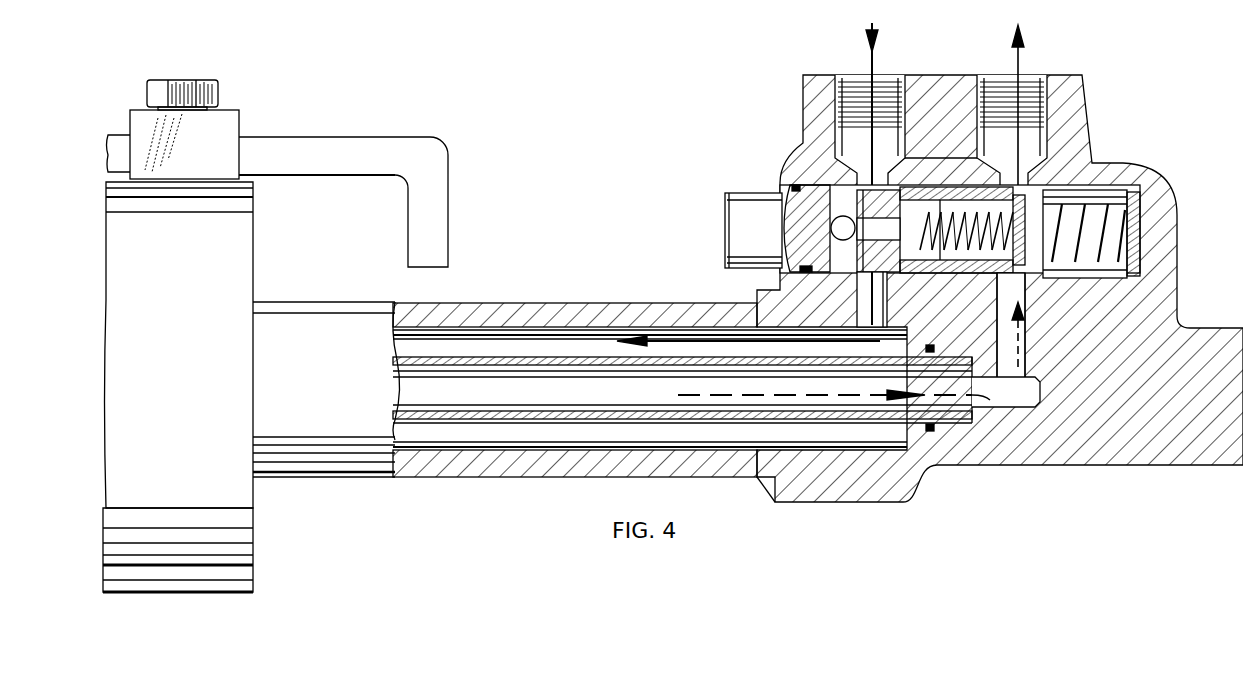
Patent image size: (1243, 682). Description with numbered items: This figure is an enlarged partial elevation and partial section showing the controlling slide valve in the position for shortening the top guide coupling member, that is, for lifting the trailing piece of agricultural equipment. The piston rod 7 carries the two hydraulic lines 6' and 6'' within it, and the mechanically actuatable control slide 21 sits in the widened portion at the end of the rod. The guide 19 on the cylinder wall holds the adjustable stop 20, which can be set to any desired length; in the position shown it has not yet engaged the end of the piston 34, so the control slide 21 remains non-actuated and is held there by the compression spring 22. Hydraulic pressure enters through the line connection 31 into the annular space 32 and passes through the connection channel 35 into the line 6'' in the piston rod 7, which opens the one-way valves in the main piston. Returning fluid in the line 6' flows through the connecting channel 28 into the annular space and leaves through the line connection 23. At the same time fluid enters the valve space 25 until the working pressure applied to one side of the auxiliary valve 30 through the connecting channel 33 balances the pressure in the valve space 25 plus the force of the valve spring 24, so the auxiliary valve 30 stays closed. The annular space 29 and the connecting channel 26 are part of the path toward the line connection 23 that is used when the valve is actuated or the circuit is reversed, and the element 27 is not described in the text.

The hydraulic line 6' is at (663, 388).
The hydraulic line 6'' is at (580, 475).
The piston rod 7 is at (528, 465).
The guide 19 is at (222, 122).
The adjustable stop 20 is at (321, 152).
The control slide 21 is at (1152, 195).
The compression spring 22 is at (1085, 215).
The line connection 23 is at (1045, 80).
The valve spring 24 is at (948, 270).
The valve space 25 is at (1073, 168).
The connecting channel 26 is at (958, 188).
The partition 27 is at (1033, 285).
The connecting channel 28 is at (1023, 345).
The annular space 29 is at (940, 187).
The auxiliary valve 30 is at (927, 160).
The line connection 31 is at (853, 80).
The annular space 32 is at (800, 162).
The connecting channel 33 is at (790, 196).
The piston 34 is at (743, 220).
The connection channel 35 is at (882, 310).